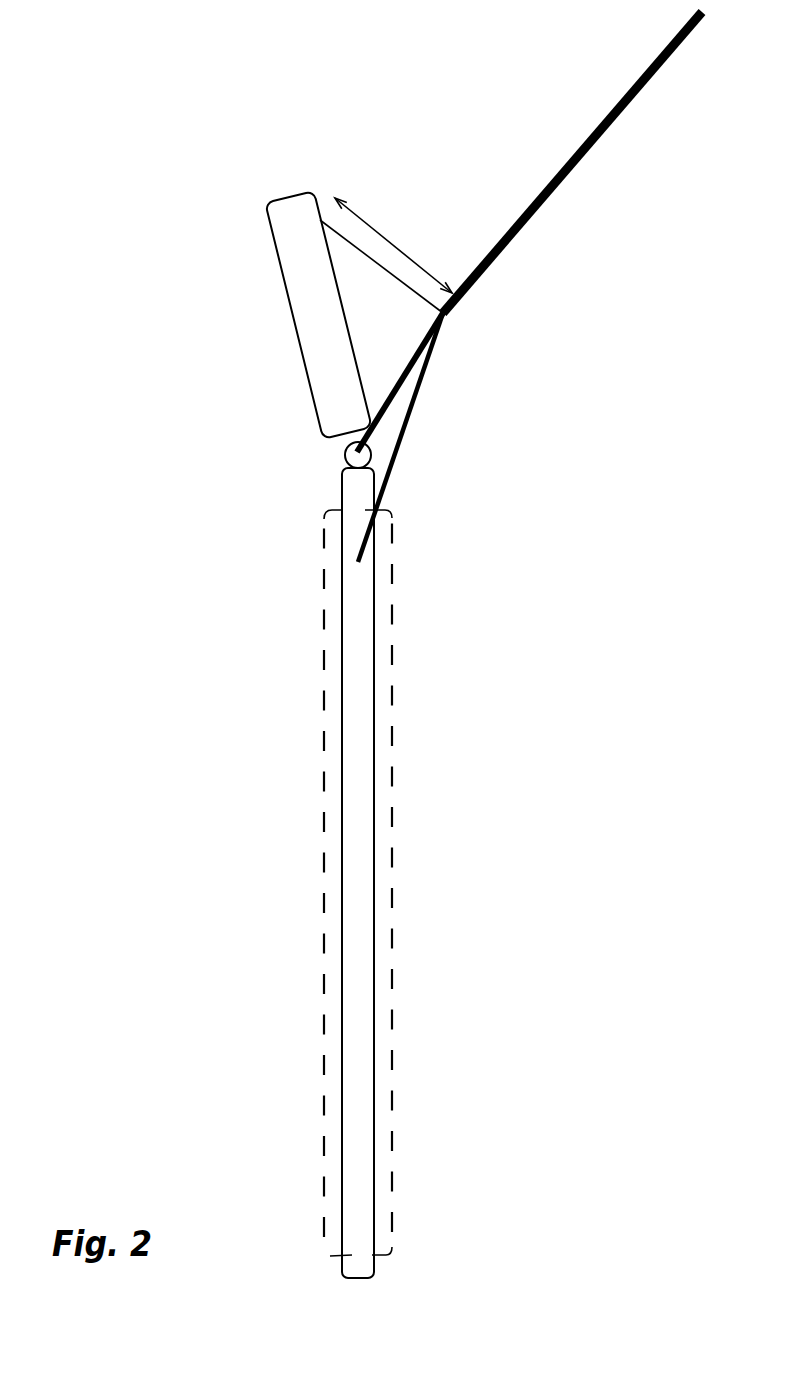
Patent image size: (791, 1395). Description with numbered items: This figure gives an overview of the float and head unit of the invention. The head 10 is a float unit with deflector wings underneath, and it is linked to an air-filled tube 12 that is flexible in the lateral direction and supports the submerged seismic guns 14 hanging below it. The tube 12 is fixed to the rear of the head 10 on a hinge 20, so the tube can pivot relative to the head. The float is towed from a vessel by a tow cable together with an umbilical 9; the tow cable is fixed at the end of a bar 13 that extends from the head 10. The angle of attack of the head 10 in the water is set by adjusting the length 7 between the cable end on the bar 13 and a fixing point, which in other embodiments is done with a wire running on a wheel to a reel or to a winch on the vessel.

The length 7 is at (408, 260).
The umbilical 9 is at (388, 486).
The head 10 is at (320, 332).
The air-filled tube 12 is at (357, 715).
The bar 13 is at (398, 375).
The submerged seismic guns 14 is at (400, 903).
The hinge 20 is at (345, 460).